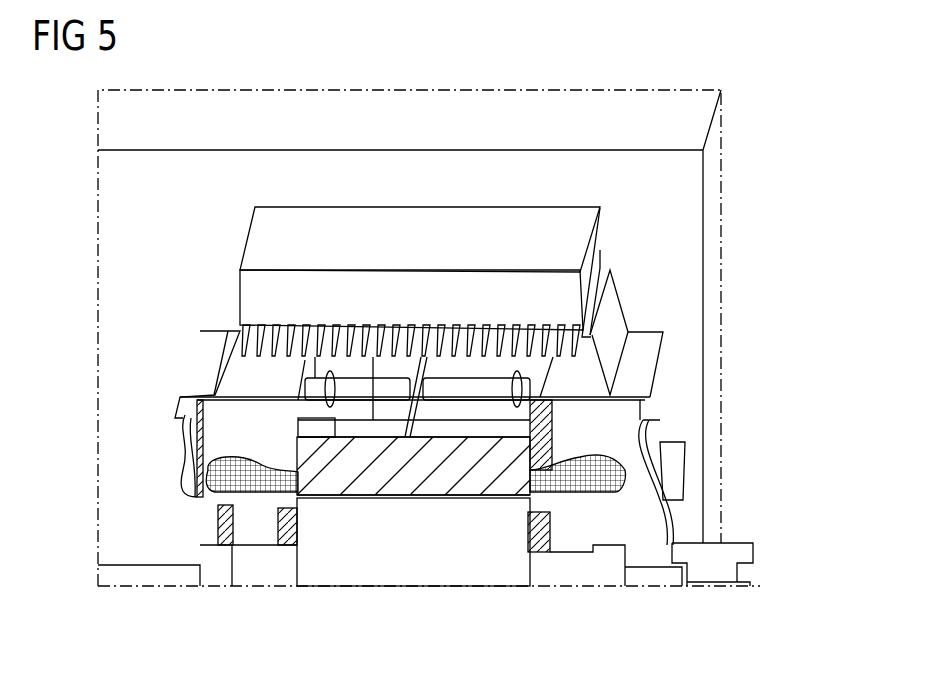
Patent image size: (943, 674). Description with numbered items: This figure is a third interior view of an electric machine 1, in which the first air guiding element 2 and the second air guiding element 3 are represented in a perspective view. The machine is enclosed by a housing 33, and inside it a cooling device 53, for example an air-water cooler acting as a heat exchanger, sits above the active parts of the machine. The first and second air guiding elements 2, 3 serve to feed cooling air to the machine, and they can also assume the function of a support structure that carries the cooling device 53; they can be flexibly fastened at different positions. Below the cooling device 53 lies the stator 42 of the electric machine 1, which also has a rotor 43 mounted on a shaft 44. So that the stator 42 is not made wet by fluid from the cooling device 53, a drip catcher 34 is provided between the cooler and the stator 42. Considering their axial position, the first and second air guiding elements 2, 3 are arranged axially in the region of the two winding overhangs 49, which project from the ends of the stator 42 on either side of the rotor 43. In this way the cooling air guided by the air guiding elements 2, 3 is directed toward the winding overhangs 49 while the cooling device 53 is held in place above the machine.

The electric machine 1 is at (776, 114).
The first air guiding element 2 is at (607, 316).
The second air guiding element 3 is at (205, 374).
The housing 33 is at (615, 116).
The drip catcher 34 is at (205, 339).
The stator 42 is at (390, 485).
The rotor 43 is at (468, 560).
The shaft 44 is at (657, 570).
The winding overhangs 49 is at (258, 490).
The cooling device 53 is at (482, 225).